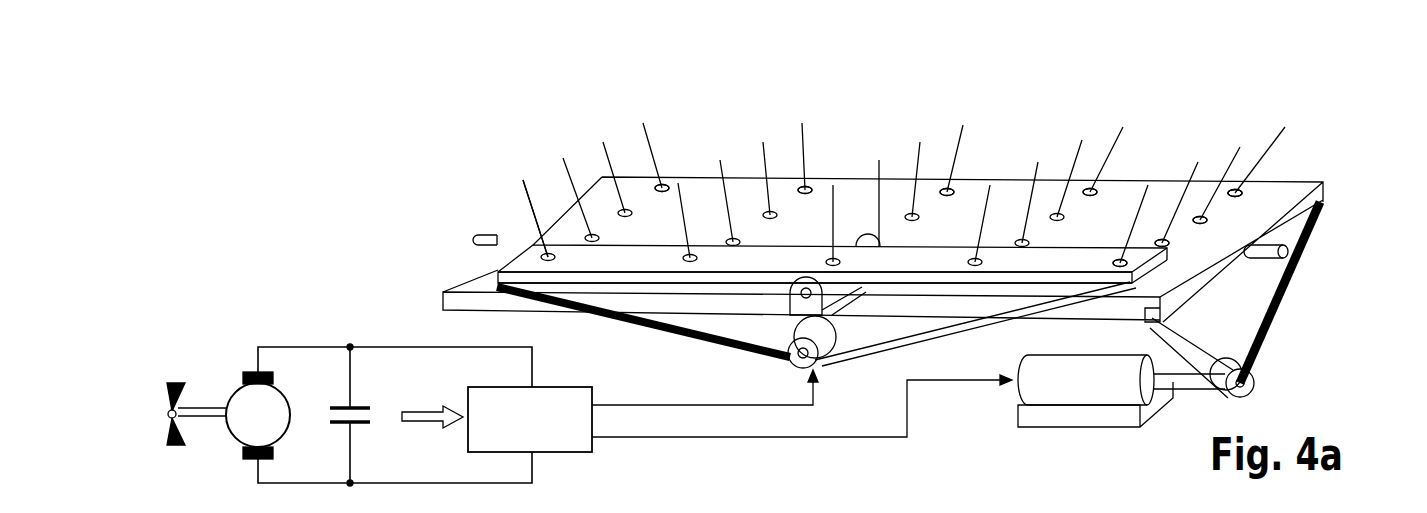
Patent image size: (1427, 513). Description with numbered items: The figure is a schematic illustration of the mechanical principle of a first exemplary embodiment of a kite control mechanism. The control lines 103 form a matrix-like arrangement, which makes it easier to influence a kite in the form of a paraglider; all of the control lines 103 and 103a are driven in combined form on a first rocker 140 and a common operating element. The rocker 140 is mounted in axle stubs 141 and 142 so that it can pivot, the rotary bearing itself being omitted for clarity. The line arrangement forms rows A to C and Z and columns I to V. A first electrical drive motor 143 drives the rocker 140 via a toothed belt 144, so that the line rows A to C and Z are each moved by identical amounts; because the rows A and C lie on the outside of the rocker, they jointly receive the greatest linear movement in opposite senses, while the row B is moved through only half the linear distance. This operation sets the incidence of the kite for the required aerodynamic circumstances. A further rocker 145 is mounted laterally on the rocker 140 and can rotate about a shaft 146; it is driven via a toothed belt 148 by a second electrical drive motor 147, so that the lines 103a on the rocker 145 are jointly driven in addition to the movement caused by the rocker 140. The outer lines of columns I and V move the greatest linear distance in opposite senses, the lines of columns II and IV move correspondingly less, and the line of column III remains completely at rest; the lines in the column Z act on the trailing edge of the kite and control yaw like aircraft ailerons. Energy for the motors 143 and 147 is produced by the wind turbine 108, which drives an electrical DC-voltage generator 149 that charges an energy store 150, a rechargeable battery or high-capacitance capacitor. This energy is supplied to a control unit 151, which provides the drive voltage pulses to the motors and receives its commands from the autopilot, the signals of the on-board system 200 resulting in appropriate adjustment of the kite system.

The control lines 103 is at (642, 140).
The control lines on the further rocker 103a is at (527, 195).
The wind turbine 108 is at (177, 380).
The first rocker 140 is at (1297, 190).
The axle stub 141 is at (1292, 252).
The axle stub 142 is at (472, 240).
The first electrical drive motor 143 is at (1093, 395).
The toothed belt 144 is at (1253, 360).
The further rocker 145 is at (523, 263).
The shaft 146 is at (790, 305).
The second electrical drive motor 147 is at (880, 318).
The toothed belt 148 is at (672, 333).
The electrical DC-voltage generator 149 is at (230, 437).
The energy store 150 is at (363, 403).
The control unit 151 is at (560, 387).
The on-board system 200 is at (423, 423).
The line row A is at (1247, 196).
The line row B is at (1207, 220).
The line row C is at (1175, 245).
The line column Z is at (1138, 263).
The line column I is at (660, 187).
The line column II is at (808, 188).
The line column III is at (949, 188).
The line column IV is at (1093, 188).
The line column V is at (1239, 189).